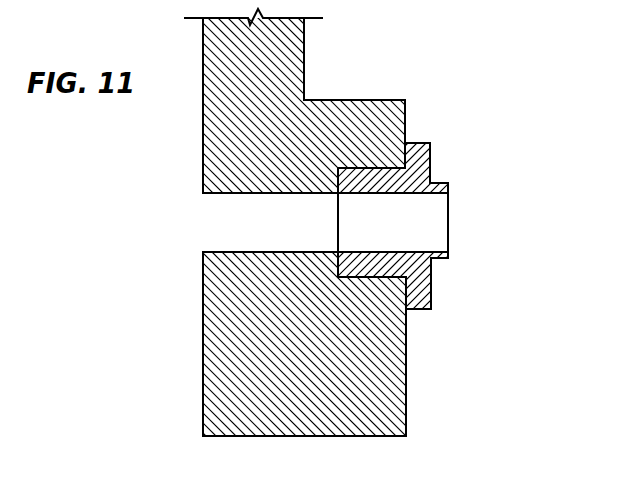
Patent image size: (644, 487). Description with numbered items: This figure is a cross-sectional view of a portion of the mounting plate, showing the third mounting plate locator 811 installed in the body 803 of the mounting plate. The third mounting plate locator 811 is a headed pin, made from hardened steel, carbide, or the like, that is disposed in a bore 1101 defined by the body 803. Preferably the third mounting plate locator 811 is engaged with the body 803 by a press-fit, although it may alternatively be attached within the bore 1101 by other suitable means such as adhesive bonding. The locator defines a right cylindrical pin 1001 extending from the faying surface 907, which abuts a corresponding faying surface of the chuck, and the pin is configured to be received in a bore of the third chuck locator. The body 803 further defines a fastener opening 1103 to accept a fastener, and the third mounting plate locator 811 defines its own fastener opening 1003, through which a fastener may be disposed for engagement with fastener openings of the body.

The body 803 is at (212, 344).
The third mounting plate locator 811 is at (433, 300).
The faying surface 907 is at (432, 270).
The right cylindrical pin 1001 is at (443, 184).
The fastener opening 1003 is at (433, 234).
The bore 1101 is at (366, 181).
The fastener opening 1103 is at (218, 254).